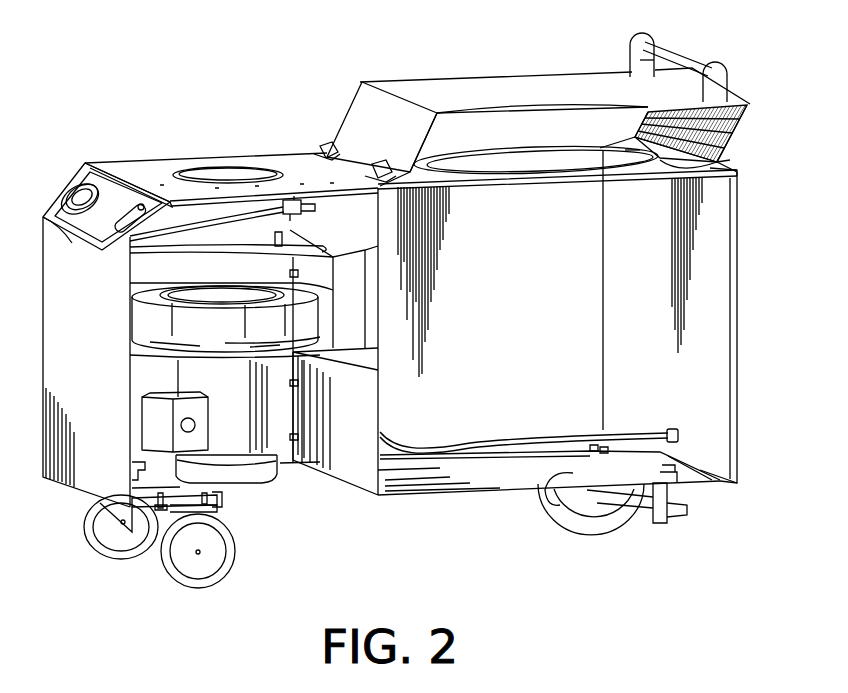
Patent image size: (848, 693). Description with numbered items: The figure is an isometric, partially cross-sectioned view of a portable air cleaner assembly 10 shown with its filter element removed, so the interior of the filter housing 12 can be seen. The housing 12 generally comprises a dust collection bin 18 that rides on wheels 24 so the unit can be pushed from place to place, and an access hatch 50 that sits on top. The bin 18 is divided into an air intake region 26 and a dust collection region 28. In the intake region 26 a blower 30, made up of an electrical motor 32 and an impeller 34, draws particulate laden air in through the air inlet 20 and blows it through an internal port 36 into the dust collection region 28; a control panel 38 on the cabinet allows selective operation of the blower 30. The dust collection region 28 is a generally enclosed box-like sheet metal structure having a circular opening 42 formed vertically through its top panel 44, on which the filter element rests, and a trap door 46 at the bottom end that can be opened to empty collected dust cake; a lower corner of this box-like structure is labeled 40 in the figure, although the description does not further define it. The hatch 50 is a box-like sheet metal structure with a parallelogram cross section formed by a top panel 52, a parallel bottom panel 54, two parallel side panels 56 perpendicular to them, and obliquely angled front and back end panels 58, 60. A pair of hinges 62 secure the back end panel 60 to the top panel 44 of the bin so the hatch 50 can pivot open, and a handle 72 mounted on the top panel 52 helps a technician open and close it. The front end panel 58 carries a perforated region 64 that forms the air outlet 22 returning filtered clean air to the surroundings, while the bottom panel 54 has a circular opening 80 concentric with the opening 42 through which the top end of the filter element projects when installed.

The air cleaner assembly 10 is at (438, 46).
The filter housing 12 is at (434, 503).
The dust collection bin 18 is at (486, 503).
The air inlet 20 is at (217, 166).
The air outlet 22 is at (752, 126).
The wheels 24 is at (217, 570).
The air intake region 26 is at (313, 490).
The dust collection region 28 is at (390, 503).
The blower 30 is at (172, 373).
The electrical motor 32 is at (255, 452).
The impeller 34 is at (137, 311).
The internal port 36 is at (357, 293).
The control panel 38 is at (80, 195).
The bottom corner 40 is at (722, 485).
The circular opening 42 is at (627, 150).
The top panel 44 is at (710, 186).
The trap door 46 is at (547, 505).
The access hatch 50 is at (535, 78).
The top panel 52 is at (516, 106).
The bottom panel 54 is at (690, 165).
The side panels 56 is at (549, 139).
The front end panel 58 is at (750, 105).
The back end panel 60 is at (393, 126).
The hinges 62 is at (372, 170).
The perforated region 64 is at (720, 143).
The handle 72 is at (700, 62).
The circular opening 80 is at (590, 148).